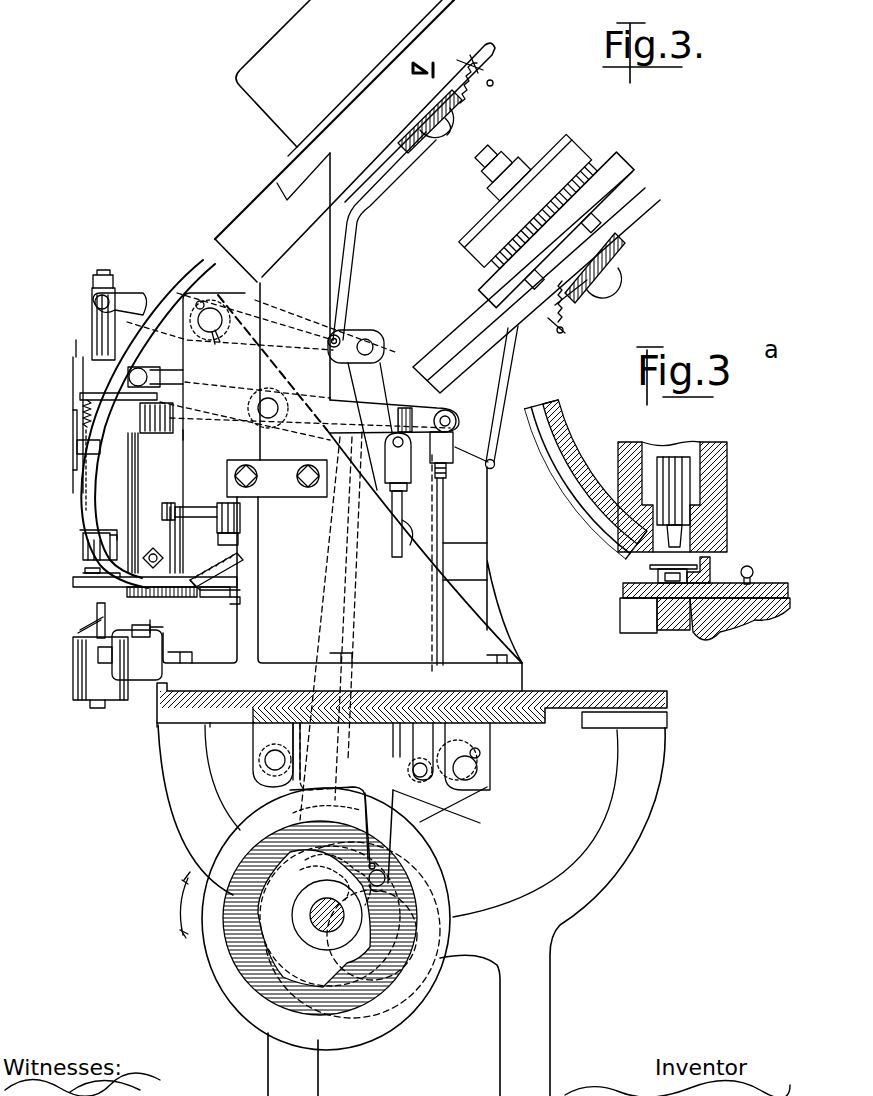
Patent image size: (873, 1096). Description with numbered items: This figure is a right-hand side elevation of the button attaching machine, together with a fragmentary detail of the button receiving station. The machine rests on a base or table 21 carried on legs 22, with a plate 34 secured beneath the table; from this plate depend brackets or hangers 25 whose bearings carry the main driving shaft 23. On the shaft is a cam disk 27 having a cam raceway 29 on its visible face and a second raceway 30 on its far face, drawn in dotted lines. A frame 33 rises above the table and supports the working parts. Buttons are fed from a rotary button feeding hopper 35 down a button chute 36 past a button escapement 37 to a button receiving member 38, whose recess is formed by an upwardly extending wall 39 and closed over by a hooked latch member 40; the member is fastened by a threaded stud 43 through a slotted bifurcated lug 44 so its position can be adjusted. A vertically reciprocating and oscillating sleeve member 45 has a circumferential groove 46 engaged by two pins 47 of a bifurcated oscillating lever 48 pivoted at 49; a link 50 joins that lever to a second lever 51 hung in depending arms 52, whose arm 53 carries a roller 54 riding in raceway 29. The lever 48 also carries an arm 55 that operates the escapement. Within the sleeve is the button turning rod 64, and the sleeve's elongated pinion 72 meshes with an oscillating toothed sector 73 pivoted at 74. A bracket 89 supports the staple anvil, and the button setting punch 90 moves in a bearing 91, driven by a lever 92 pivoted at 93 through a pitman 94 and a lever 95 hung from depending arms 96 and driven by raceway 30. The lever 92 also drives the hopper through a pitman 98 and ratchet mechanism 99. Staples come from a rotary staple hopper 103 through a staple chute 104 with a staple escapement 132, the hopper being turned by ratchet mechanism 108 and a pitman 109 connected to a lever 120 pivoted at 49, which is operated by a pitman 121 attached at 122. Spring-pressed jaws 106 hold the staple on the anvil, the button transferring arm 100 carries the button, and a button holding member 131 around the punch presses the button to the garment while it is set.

In FIG. 3, the base or table 21 is at (592, 700).
In FIG. 3, the legs 22 is at (640, 760).
In FIG. 3, the main driving shaft 23 is at (312, 914).
In FIG. 3, the bracket or hanger 25 is at (378, 755).
In FIG. 3, the cam disk 27 is at (435, 872).
In FIG. 3, the cam raceway 29 is at (255, 962).
In FIG. 3, the cam raceway 30 is at (447, 935).
In FIG. 3, the frame 33 is at (336, 422).
In FIG. 3A, the frame 33 is at (730, 494).
In FIG. 3, the plate 34 is at (412, 694).
In FIG. 3, the rotary button feeding hopper 35 is at (339, 78).
In FIG. 3, the button chute 36 is at (218, 253).
In FIG. 3A, the button chute 36 is at (570, 430).
In FIG. 3, the button escapement 37 is at (80, 445).
In FIG. 3, the button receiving member 38 is at (185, 600).
In FIG. 3A, the button receiving member 38 is at (755, 585).
In FIG. 3A, the upwardly extending wall 39 is at (712, 560).
In FIG. 3, the latch member 40 is at (232, 600).
In FIG. 3A, the threaded stud 43 is at (670, 630).
In FIG. 3, the bifurcated lug 44 is at (118, 605).
In FIG. 3A, the bifurcated lug 44 is at (622, 618).
In FIG. 3, the sleeve member 45 is at (175, 430).
In FIG. 3, the circumferential groove 46 is at (140, 410).
In FIG. 3, the pins 47 is at (150, 385).
In FIG. 3, the oscillating lever 48 is at (338, 402).
In FIG. 3, the pivot 49 is at (265, 418).
In FIG. 3, the link 50 is at (443, 518).
In FIG. 3, the second lever 51 is at (345, 768).
In FIG. 3, the depending arms 52 is at (258, 742).
In FIG. 3, the arm 53 is at (385, 810).
In FIG. 3, the roller 54 is at (385, 875).
In FIG. 3, the arm 55 is at (118, 410).
In FIG. 3A, the button turning rod 64 is at (690, 480).
In FIG. 3, the elongated pinion 72 is at (168, 503).
In FIG. 3, the oscillating toothed sector 73 is at (190, 507).
In FIG. 3, the pivot 74 is at (226, 503).
In FIG. 3, the bracket 89 is at (90, 680).
In FIG. 3, the button setting punch 90 is at (100, 330).
In FIG. 3, the bearing 91 is at (105, 452).
In FIG. 3, the lever 92 is at (340, 332).
In FIG. 3, the pivot 93 is at (215, 315).
In FIG. 3, the pitman 94 is at (368, 483).
In FIG. 3, the lever 95 is at (420, 820).
In FIG. 3, the depending arms 96 is at (480, 740).
In FIG. 3, the pitman 98 is at (350, 243).
In FIG. 3, the ratchet mechanism 99 is at (445, 110).
In FIG. 3, the arm of button transferring lever 100 is at (115, 586).
In FIG. 3, the rotary staple hopper 103 is at (495, 220).
In FIG. 3, the staple chute 104 is at (400, 370).
In FIG. 3, the spring-pressed jaws 106 is at (97, 608).
In FIG. 3, the ratchet mechanism 108 is at (592, 300).
In FIG. 3, the pitman 109 is at (518, 355).
In FIG. 3, the lever 120 is at (449, 413).
In FIG. 3, the pitman 121 is at (410, 543).
In FIG. 3, the pivotal connection 122 is at (393, 462).
In FIG. 3, the button holding member 131 is at (88, 548).
In FIG. 3, the staple escapement 132 is at (230, 580).